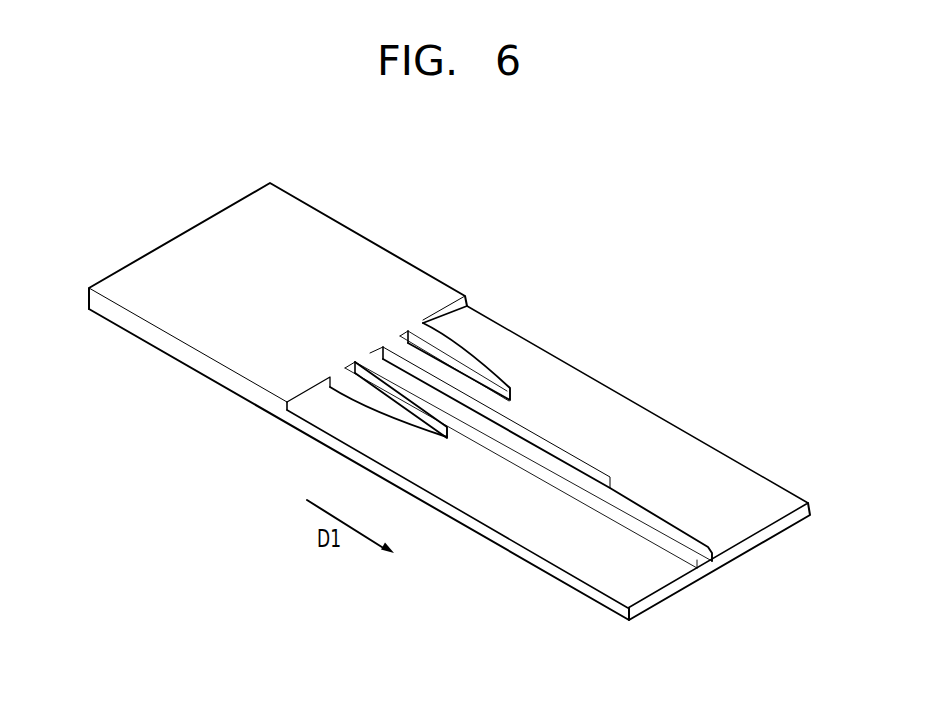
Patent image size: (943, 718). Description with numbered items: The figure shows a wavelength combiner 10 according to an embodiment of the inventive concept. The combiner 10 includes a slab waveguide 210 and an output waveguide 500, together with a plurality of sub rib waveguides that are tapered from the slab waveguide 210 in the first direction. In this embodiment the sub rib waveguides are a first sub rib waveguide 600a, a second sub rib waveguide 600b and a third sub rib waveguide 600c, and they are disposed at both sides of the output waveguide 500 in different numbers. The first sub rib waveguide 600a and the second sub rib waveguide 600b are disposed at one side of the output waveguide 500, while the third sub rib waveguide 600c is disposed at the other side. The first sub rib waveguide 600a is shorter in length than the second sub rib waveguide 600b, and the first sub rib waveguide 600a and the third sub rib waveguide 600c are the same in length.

The wavelength combiner 10 is at (585, 175).
The slab waveguide 210 is at (355, 243).
The output waveguide 500 is at (624, 506).
The first sub rib waveguide 600a is at (453, 350).
The second sub rib waveguide 600b is at (518, 415).
The third sub rib waveguide 600c is at (393, 400).